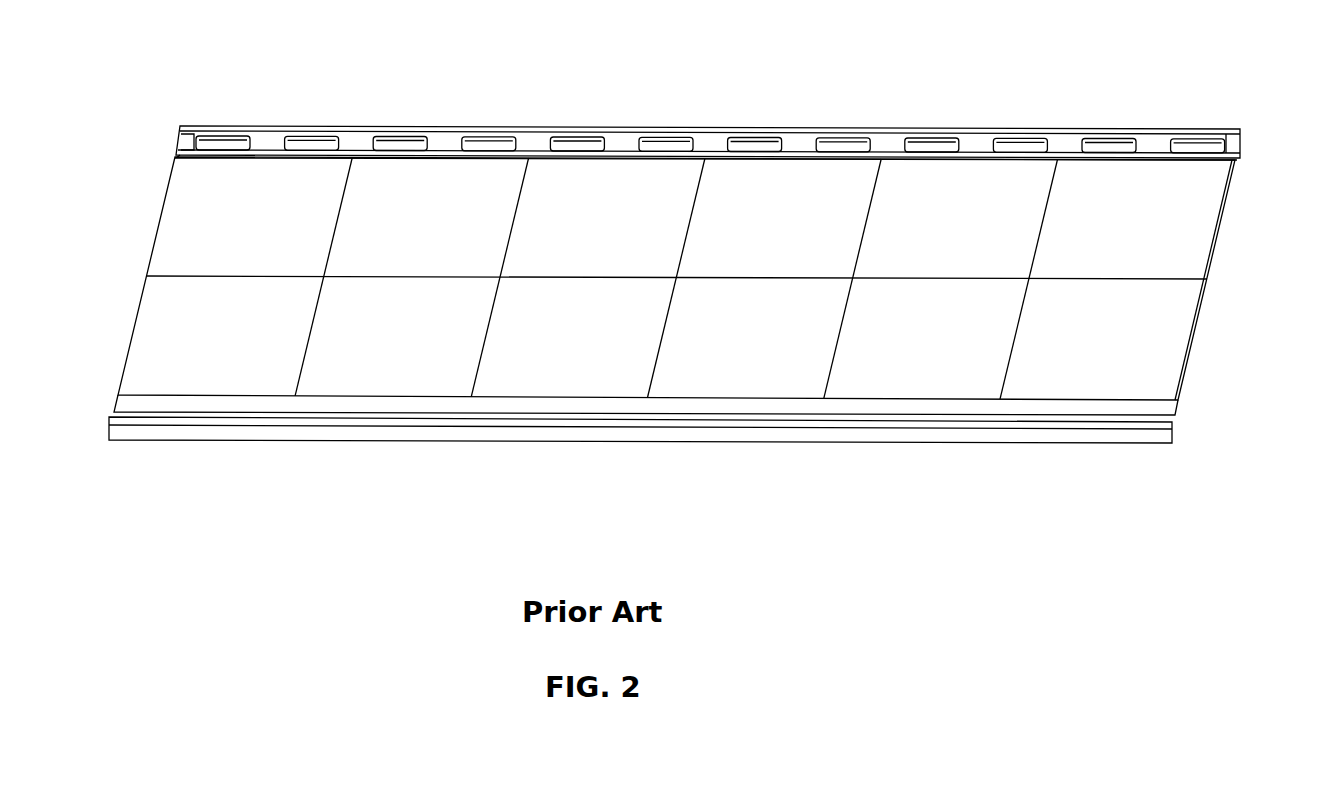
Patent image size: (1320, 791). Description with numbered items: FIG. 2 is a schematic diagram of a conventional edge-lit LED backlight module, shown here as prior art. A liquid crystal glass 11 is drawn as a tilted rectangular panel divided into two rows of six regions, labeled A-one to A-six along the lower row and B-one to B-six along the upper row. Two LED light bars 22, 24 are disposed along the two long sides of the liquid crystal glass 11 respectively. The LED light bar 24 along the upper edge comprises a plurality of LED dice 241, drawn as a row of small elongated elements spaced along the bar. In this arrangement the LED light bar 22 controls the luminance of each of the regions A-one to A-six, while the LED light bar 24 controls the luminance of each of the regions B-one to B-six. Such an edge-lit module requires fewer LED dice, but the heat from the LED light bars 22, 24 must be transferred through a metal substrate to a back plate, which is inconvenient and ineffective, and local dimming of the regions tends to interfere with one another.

The liquid crystal glass 11 is at (1223, 221).
The LED light bar 22 is at (1178, 426).
The LED light bar 24 is at (1240, 130).
The LED dice 241 is at (1192, 128).